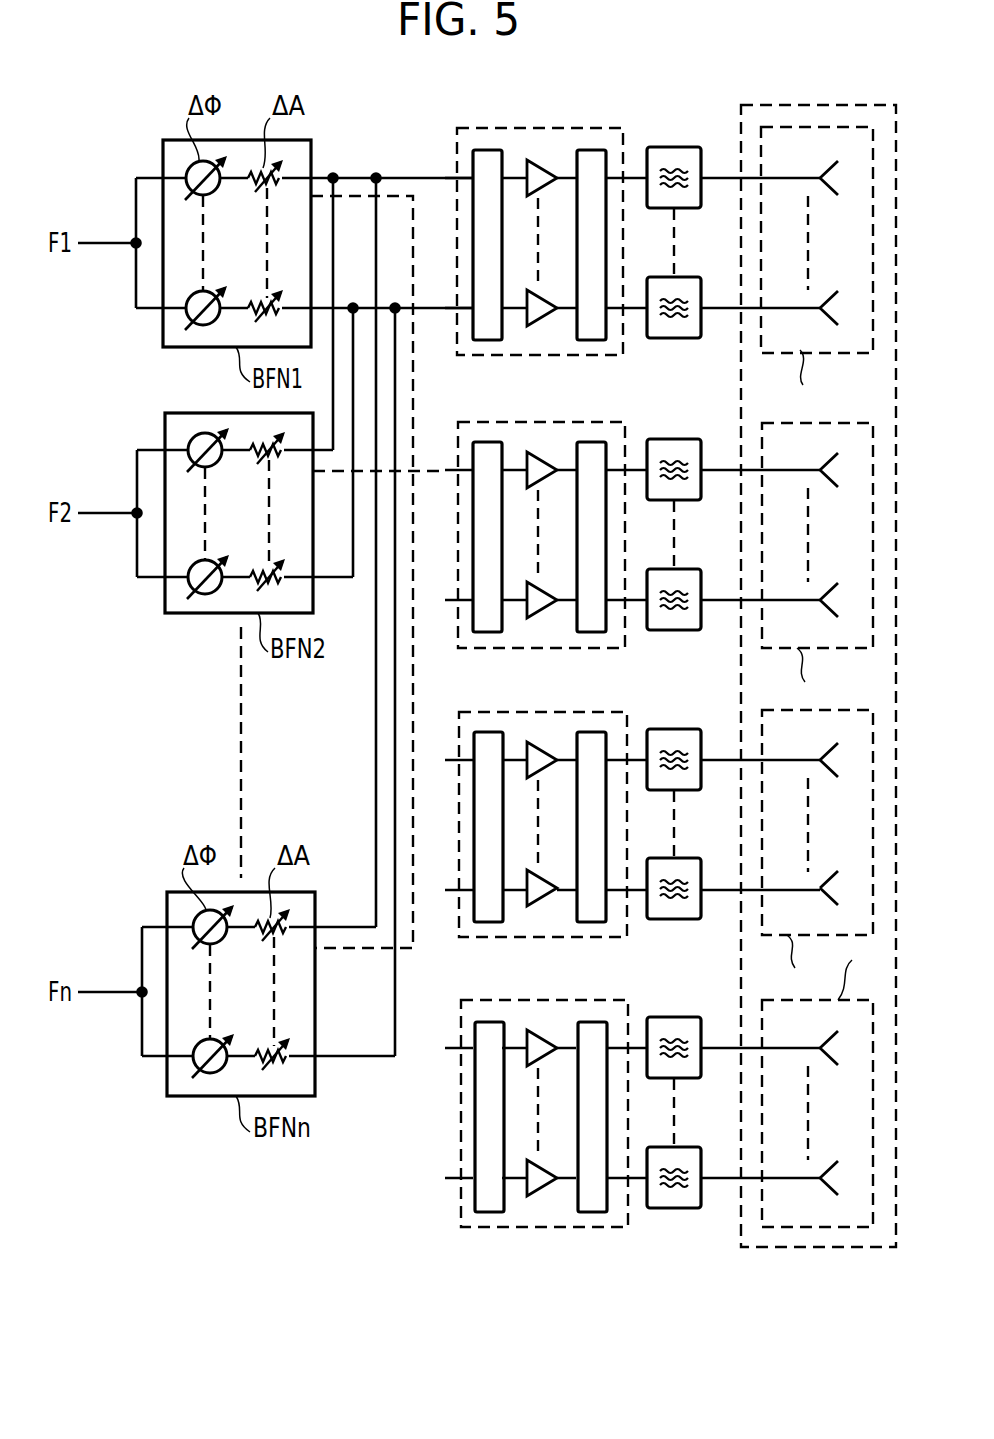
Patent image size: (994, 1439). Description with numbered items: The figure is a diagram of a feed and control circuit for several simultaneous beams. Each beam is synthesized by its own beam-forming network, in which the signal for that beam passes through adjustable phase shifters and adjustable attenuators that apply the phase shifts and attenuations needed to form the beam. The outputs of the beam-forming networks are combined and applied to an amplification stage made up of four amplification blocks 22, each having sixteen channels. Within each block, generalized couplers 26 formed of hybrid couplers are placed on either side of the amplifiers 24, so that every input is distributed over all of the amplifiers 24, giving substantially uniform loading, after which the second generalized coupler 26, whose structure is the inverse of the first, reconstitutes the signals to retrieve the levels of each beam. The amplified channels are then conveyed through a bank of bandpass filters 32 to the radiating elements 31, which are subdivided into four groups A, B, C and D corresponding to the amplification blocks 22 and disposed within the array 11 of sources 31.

The array of sources 11 is at (850, 106).
The amplification block 22 is at (566, 132).
The amplifiers 24 is at (540, 160).
The second generalized coupler 26 is at (486, 150).
The antenna sources 31 is at (823, 165).
The bandpass filters 32 is at (670, 147).